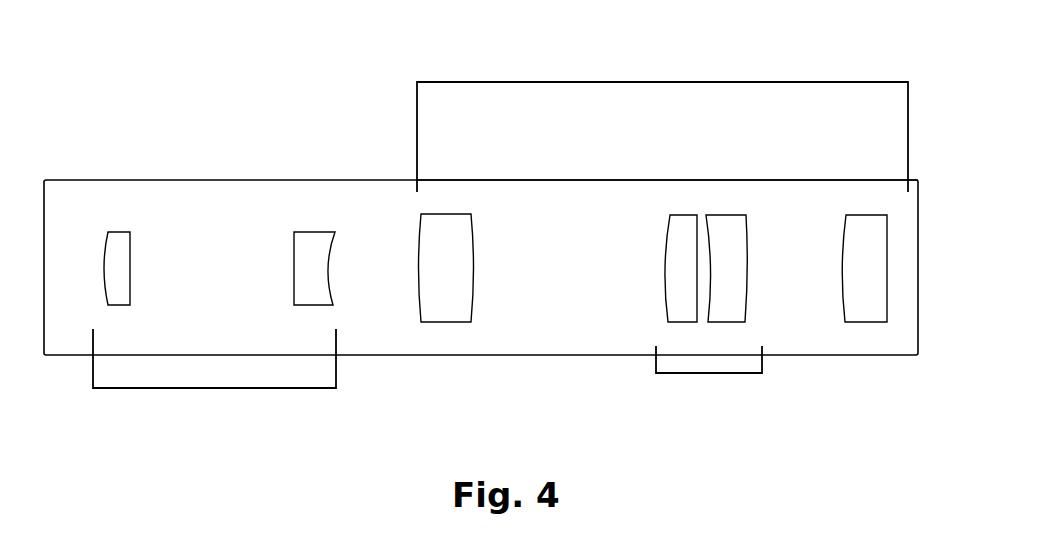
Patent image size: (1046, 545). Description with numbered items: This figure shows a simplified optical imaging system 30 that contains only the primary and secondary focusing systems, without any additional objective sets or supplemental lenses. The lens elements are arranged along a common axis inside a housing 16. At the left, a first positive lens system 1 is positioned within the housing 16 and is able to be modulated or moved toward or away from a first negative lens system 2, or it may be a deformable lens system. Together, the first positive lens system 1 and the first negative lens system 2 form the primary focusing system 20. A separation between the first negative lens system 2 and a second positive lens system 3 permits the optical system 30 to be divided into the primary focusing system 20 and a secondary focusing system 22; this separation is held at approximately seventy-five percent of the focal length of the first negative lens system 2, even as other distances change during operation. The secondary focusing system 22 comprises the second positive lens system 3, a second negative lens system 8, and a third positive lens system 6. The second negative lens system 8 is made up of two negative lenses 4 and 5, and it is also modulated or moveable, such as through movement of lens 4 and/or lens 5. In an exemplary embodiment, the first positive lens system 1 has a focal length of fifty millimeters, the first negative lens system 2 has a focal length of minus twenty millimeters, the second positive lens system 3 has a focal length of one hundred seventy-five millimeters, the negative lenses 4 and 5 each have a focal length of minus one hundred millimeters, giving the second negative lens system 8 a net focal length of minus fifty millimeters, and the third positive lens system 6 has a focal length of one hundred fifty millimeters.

The first positive lens system 1 is at (122, 258).
The first negative lens system 2 is at (312, 267).
The second positive lens system 3 is at (453, 262).
The negative lens 4 is at (733, 220).
The negative lens 5 is at (677, 220).
The third positive lens system 6 is at (875, 235).
The second negative lens system 8 is at (710, 373).
The housing 16 is at (510, 180).
The primary focusing system 20 is at (212, 388).
The secondary focusing system 22 is at (664, 82).
The optical system 30 is at (243, 140).